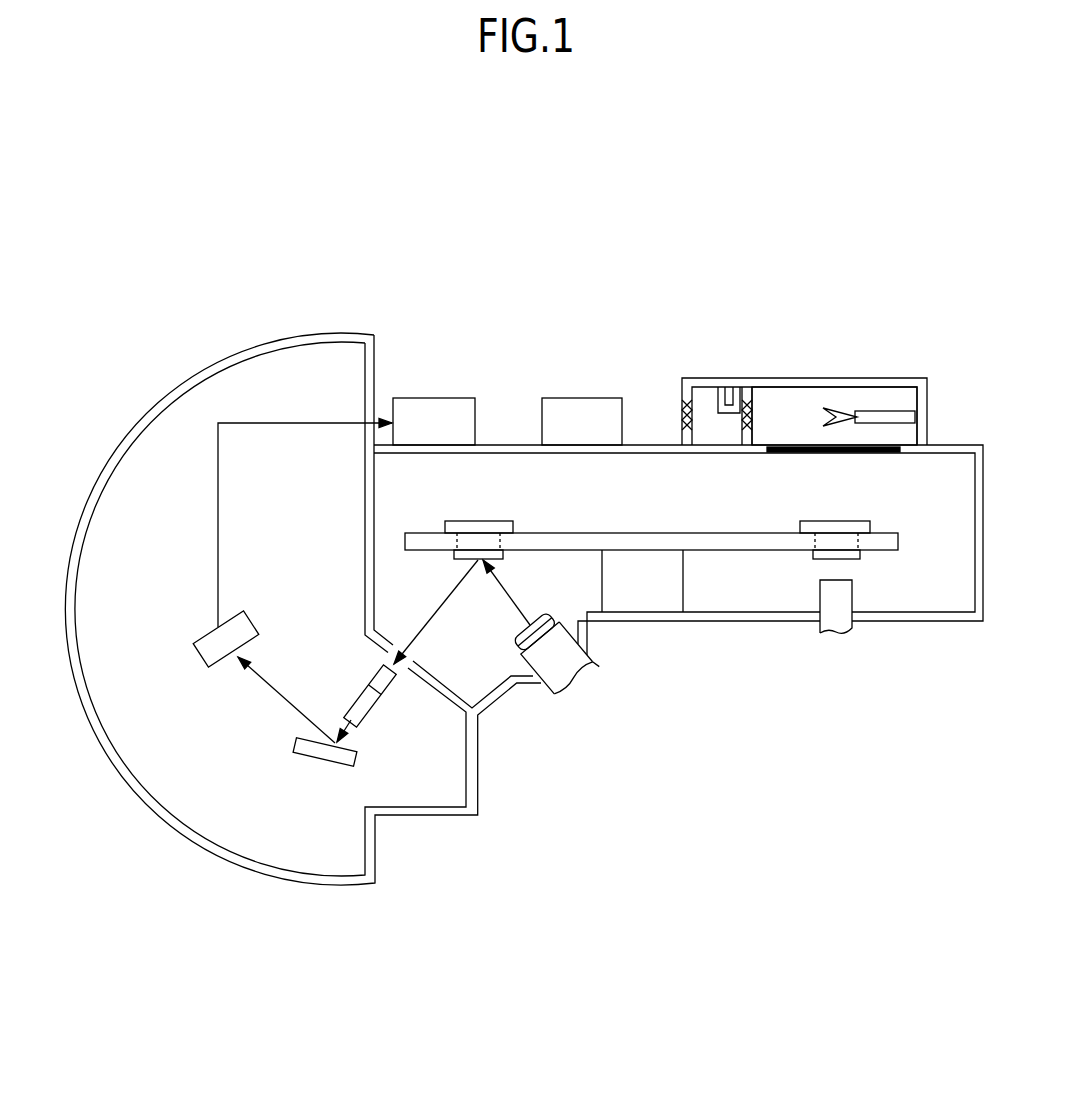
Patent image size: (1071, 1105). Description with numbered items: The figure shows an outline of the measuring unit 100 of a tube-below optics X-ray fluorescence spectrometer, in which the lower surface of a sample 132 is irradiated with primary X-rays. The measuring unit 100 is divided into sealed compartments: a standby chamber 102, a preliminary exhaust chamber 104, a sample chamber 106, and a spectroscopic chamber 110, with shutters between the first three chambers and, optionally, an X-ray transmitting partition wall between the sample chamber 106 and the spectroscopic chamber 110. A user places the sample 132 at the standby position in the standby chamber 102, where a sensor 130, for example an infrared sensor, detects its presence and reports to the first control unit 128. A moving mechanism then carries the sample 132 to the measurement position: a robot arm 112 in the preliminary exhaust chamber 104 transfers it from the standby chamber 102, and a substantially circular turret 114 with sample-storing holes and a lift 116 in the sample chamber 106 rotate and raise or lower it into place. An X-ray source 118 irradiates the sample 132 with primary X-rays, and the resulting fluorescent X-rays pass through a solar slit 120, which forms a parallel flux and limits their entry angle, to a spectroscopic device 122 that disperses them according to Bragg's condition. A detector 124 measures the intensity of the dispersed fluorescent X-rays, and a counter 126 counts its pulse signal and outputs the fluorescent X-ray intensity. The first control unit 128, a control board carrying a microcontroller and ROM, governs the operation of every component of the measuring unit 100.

The measuring unit 100 is at (534, 236).
The standby chamber 102 is at (712, 408).
The preliminary exhaust chamber 104 is at (797, 408).
The sample chamber 106 is at (886, 600).
The spectroscopic chamber 110 is at (227, 817).
The robot arm 112 is at (887, 410).
The turret 114 is at (640, 533).
The lift 116 is at (819, 596).
The X-ray source 118 is at (553, 697).
The solar slit 120 is at (364, 684).
The spectroscopic device 122 is at (322, 768).
The detector 124 is at (200, 656).
The counter 126 is at (432, 398).
The first control unit 128 is at (582, 398).
The sensor 130 is at (737, 393).
The sample 132 is at (515, 530).